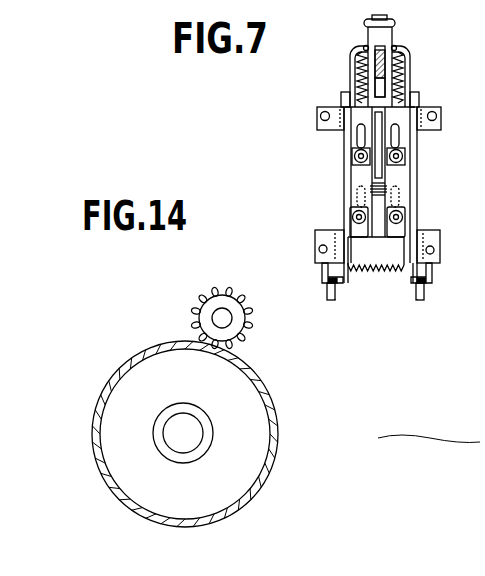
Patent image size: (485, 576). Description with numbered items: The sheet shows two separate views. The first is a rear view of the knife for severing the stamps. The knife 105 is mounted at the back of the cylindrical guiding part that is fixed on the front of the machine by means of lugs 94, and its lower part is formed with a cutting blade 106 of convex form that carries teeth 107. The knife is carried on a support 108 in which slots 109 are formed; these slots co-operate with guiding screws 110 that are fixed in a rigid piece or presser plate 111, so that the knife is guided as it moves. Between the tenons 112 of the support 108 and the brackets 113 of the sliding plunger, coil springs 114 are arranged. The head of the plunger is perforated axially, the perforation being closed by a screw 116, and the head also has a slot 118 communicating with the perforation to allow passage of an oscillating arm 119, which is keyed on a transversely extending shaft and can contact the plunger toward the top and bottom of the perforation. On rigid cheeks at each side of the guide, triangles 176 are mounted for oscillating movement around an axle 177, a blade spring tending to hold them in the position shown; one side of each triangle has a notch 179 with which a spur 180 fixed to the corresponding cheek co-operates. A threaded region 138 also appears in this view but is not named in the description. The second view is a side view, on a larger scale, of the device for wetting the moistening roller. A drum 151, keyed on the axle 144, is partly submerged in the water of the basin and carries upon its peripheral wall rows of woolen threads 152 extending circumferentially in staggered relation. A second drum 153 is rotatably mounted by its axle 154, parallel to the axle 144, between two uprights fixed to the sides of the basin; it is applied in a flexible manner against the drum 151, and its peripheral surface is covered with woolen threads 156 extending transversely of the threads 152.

In FIG. 7, the screw 116 is at (388, 19).
In FIG. 7, the brackets 113 is at (352, 46).
In FIG. 7, the coil springs 114 is at (350, 54).
In FIG. 7, the slot 118 is at (378, 82).
In FIG. 7, the oscillating arm 119 is at (385, 72).
In FIG. 7, the tenons 112 is at (341, 100).
In FIG. 7, the lugs 94 is at (317, 108).
In FIG. 7, the support 108 is at (362, 118).
In FIG. 7, the slots 109 is at (357, 138).
In FIG. 7, the guiding screws 110 is at (354, 157).
In FIG. 7, the presser plate 111 is at (362, 174).
In FIG. 7, the threaded portion 138 is at (371, 191).
In FIG. 7, the knife 105 is at (376, 216).
In FIG. 7, the cutting blade 106 is at (376, 251).
In FIG. 7, the teeth 107 is at (351, 268).
In FIG. 7, the axle 177 is at (322, 270).
In FIG. 7, the spur 180 is at (328, 280).
In FIG. 7, the notch 179 is at (327, 292).
In FIG. 7, the triangles 176 is at (417, 293).
In FIG. 14, the drum 151 is at (150, 482).
In FIG. 14, the woolen threads 152 is at (98, 421).
In FIG. 14, the axle 144 is at (185, 430).
In FIG. 14, the second drum 153 is at (199, 320).
In FIG. 14, the axle 154 is at (229, 327).
In FIG. 14, the woolen threads 156 is at (207, 293).